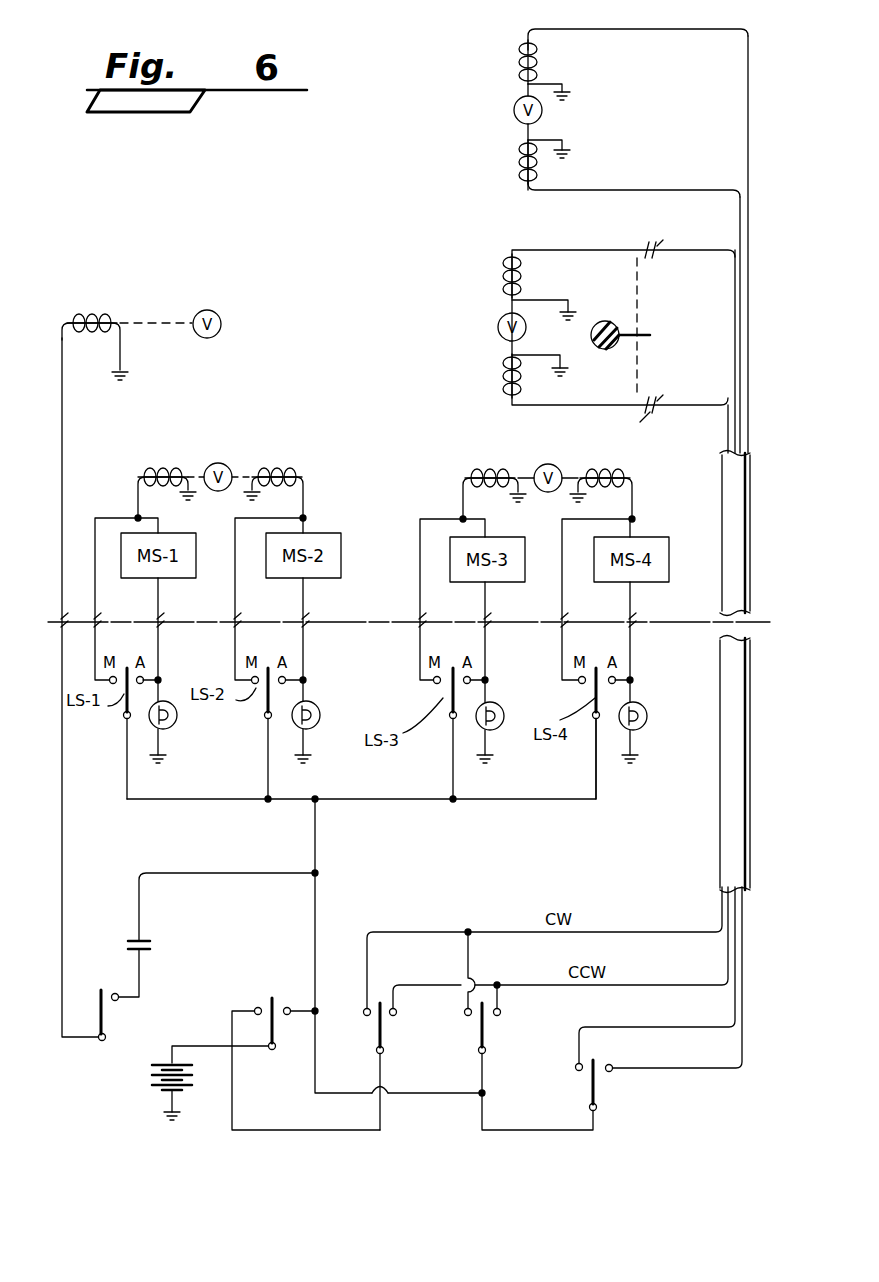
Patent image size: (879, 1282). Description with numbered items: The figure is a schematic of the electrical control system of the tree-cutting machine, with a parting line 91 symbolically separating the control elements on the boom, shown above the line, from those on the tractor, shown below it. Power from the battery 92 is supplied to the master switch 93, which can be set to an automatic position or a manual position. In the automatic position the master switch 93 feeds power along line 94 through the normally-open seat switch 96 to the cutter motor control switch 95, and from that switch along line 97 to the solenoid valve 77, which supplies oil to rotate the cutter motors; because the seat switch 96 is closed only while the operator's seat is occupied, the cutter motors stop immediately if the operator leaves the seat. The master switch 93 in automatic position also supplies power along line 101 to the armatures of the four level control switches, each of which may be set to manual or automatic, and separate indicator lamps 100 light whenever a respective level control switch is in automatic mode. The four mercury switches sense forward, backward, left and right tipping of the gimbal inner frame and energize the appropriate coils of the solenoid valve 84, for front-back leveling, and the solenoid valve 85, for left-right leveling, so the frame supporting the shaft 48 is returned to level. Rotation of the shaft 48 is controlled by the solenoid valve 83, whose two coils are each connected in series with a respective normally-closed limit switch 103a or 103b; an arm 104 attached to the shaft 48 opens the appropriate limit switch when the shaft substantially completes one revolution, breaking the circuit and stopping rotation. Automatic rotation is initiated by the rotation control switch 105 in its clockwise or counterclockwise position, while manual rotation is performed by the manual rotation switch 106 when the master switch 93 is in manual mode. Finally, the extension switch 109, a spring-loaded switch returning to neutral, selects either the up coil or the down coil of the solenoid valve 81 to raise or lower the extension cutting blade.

The solenoid valve 77 is at (208, 302).
The solenoid valve 81 is at (500, 125).
The solenoid valve 83 is at (478, 346).
The solenoid valve 84 is at (227, 443).
The solenoid valve 85 is at (550, 456).
The shaft 48 is at (612, 323).
The arm 104 is at (666, 321).
The limit switch 103a is at (644, 240).
The limit switch 103b is at (656, 412).
The parting line 91 is at (52, 620).
The line 97 is at (64, 764).
The indicator lamps 100 is at (177, 718).
The line 101 is at (380, 800).
The line 94 is at (160, 873).
The seat switch 96 is at (126, 943).
The cutter motor control switch 95 is at (108, 1014).
The battery 92 is at (150, 1083).
The master switch 93 is at (282, 1030).
The manual rotation switch 106 is at (388, 1028).
The rotation control switch 105 is at (490, 1033).
The extension switch 109 is at (605, 1087).